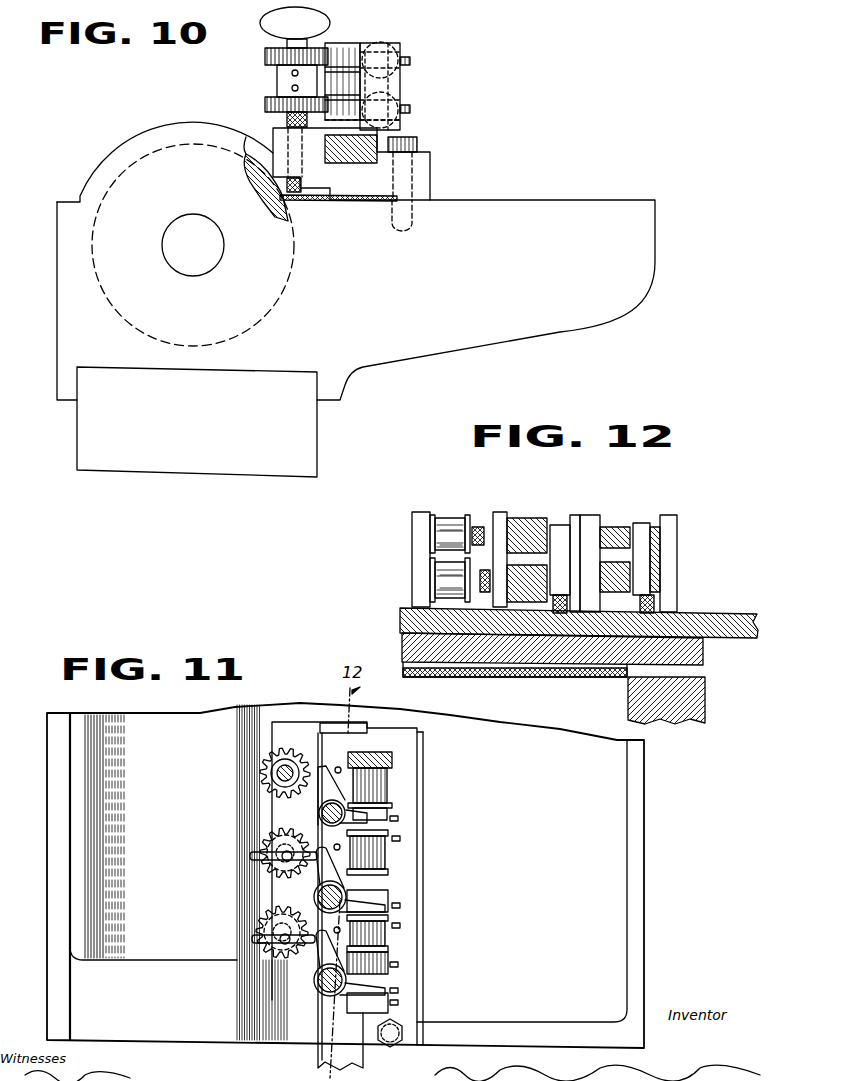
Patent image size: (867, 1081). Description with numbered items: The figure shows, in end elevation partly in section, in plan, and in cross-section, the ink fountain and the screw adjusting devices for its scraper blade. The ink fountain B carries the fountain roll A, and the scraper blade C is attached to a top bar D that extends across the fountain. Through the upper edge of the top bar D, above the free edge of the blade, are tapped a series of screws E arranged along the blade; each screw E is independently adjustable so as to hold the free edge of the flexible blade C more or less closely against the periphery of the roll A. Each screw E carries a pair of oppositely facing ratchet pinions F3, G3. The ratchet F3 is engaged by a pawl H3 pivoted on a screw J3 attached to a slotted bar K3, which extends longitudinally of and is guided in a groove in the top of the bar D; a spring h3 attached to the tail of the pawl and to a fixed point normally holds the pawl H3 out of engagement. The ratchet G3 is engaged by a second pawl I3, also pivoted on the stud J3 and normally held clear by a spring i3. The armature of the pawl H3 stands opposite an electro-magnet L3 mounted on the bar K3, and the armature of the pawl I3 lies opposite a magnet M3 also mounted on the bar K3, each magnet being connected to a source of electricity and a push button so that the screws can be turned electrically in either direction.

In FIG. 10, the fountain roll A is at (293, 267).
In FIG. 11, the fountain roll A is at (345, 875).
In FIG. 10, the ink fountain B is at (486, 300).
In FIG. 12, the ink fountain B is at (705, 697).
In FIG. 11, the ink fountain B is at (522, 881).
In FIG. 10, the scraper blade C is at (323, 200).
In FIG. 12, the scraper blade C is at (593, 677).
In FIG. 11, the scraper blade C is at (305, 705).
In FIG. 10, the top bar D is at (423, 173).
In FIG. 12, the top bar D is at (703, 655).
In FIG. 11, the top bar D is at (417, 760).
In FIG. 10, the screw E is at (260, 27).
In FIG. 11, the screw E is at (250, 858).
In FIG. 10, the ratchet pinion F3 is at (265, 58).
In FIG. 11, the ratchet pinion F3 is at (257, 842).
In FIG. 10, the ratchet pinion G3 is at (265, 102).
In FIG. 11, the ratchet pinion G3 is at (260, 773).
In FIG. 10, the pawl H3 is at (360, 53).
In FIG. 12, the pawl H3 is at (477, 520).
In FIG. 11, the pawl H3 is at (305, 900).
In FIG. 10, the pawl I3 is at (372, 100).
In FIG. 12, the pawl I3 is at (470, 598).
In FIG. 11, the pawl I3 is at (334, 766).
In FIG. 10, the screw stud J3 is at (342, 43).
In FIG. 12, the screw stud J3 is at (577, 520).
In FIG. 11, the screw stud J3 is at (323, 815).
In FIG. 10, the slotted bar K3 is at (340, 198).
In FIG. 12, the slotted bar K3 is at (740, 615).
In FIG. 11, the slotted bar K3 is at (318, 1050).
In FIG. 10, the electro-magnet L3 is at (403, 50).
In FIG. 12, the electro-magnet L3 is at (443, 527).
In FIG. 11, the electro-magnet L3 is at (400, 880).
In FIG. 10, the magnet M3 is at (400, 125).
In FIG. 12, the magnet M3 is at (443, 585).
In FIG. 11, the magnet M3 is at (400, 783).
In FIG. 10, the spring h3 is at (408, 62).
In FIG. 12, the spring h3 is at (492, 530).
In FIG. 11, the spring h3 is at (400, 908).
In FIG. 10, the spring i3 is at (408, 108).
In FIG. 12, the spring i3 is at (495, 630).
In FIG. 11, the spring i3 is at (400, 818).